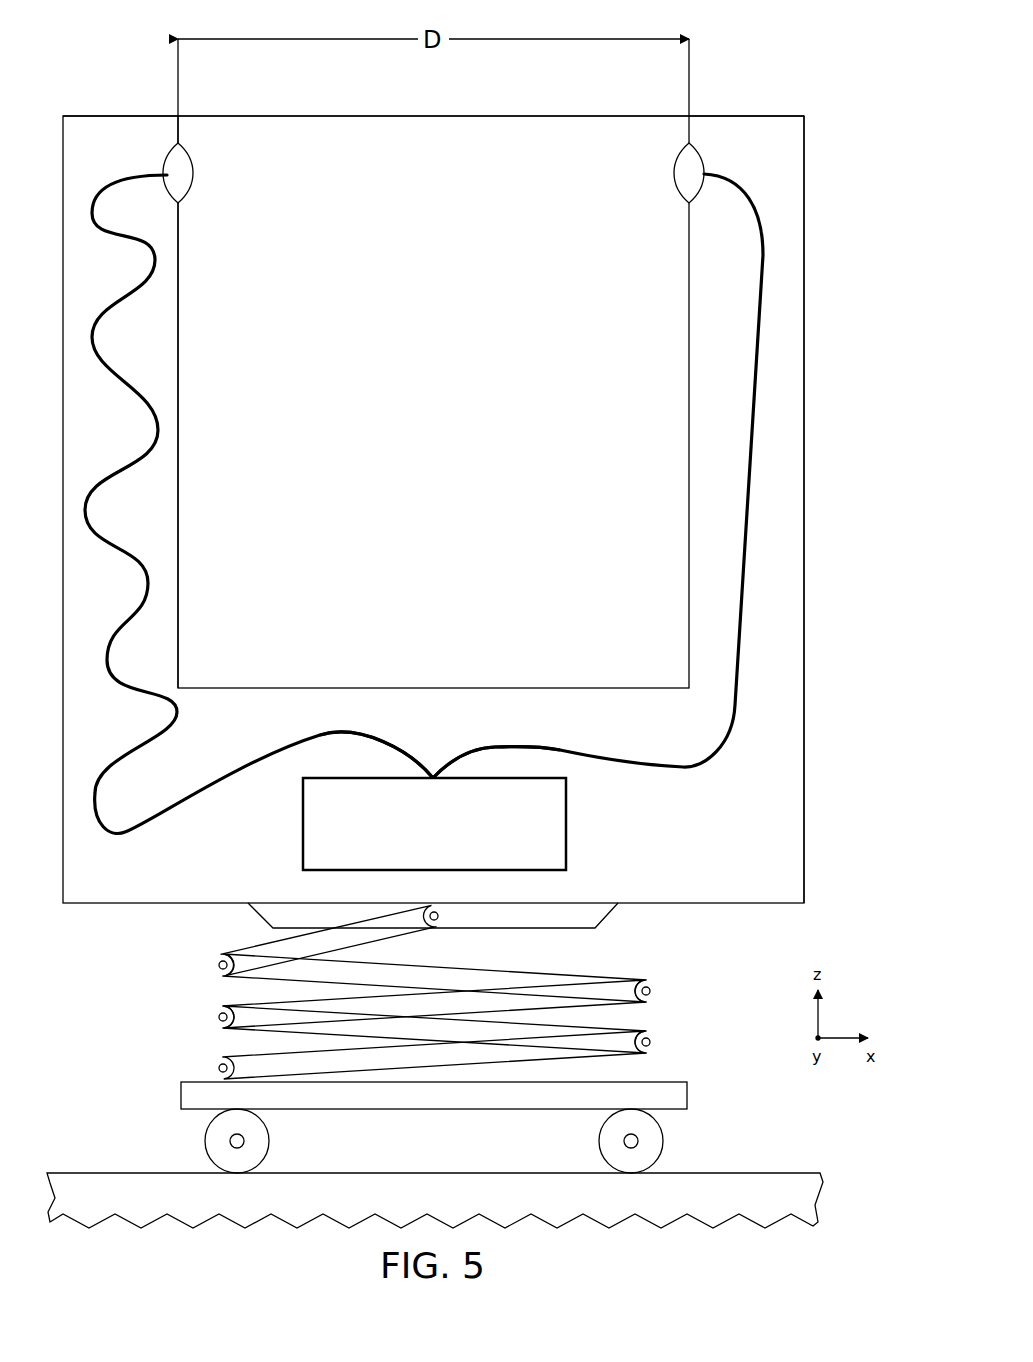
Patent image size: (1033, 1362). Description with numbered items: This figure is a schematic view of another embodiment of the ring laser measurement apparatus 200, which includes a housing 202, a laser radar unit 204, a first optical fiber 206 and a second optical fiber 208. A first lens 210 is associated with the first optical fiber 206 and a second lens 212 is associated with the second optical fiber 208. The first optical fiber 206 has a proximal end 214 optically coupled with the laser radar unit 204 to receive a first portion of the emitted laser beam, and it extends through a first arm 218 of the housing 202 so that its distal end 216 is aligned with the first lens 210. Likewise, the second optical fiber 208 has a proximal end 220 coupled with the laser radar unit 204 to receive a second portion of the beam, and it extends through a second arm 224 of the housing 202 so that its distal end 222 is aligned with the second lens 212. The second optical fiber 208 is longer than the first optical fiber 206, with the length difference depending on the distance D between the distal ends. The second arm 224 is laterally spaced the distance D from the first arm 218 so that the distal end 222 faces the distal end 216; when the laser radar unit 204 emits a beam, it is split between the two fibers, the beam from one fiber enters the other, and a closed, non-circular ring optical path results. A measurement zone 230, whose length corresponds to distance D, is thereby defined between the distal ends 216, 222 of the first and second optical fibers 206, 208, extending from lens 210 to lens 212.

The ring laser measurement apparatus 200 is at (811, 97).
The housing 202 is at (804, 903).
The laser radar unit 204 is at (566, 825).
The first optical fiber 206 is at (683, 767).
The second optical fiber 208 is at (126, 382).
The first lens 210 is at (675, 174).
The second lens 212 is at (194, 174).
The proximal end of first optical fiber 214 is at (512, 740).
The distal end of first optical fiber 216 is at (744, 138).
The first arm 218 is at (804, 397).
The proximal end of second optical fiber 220 is at (402, 736).
The distal end of second optical fiber 222 is at (120, 135).
The second arm 224 is at (178, 478).
The measurement zone 230 is at (498, 137).